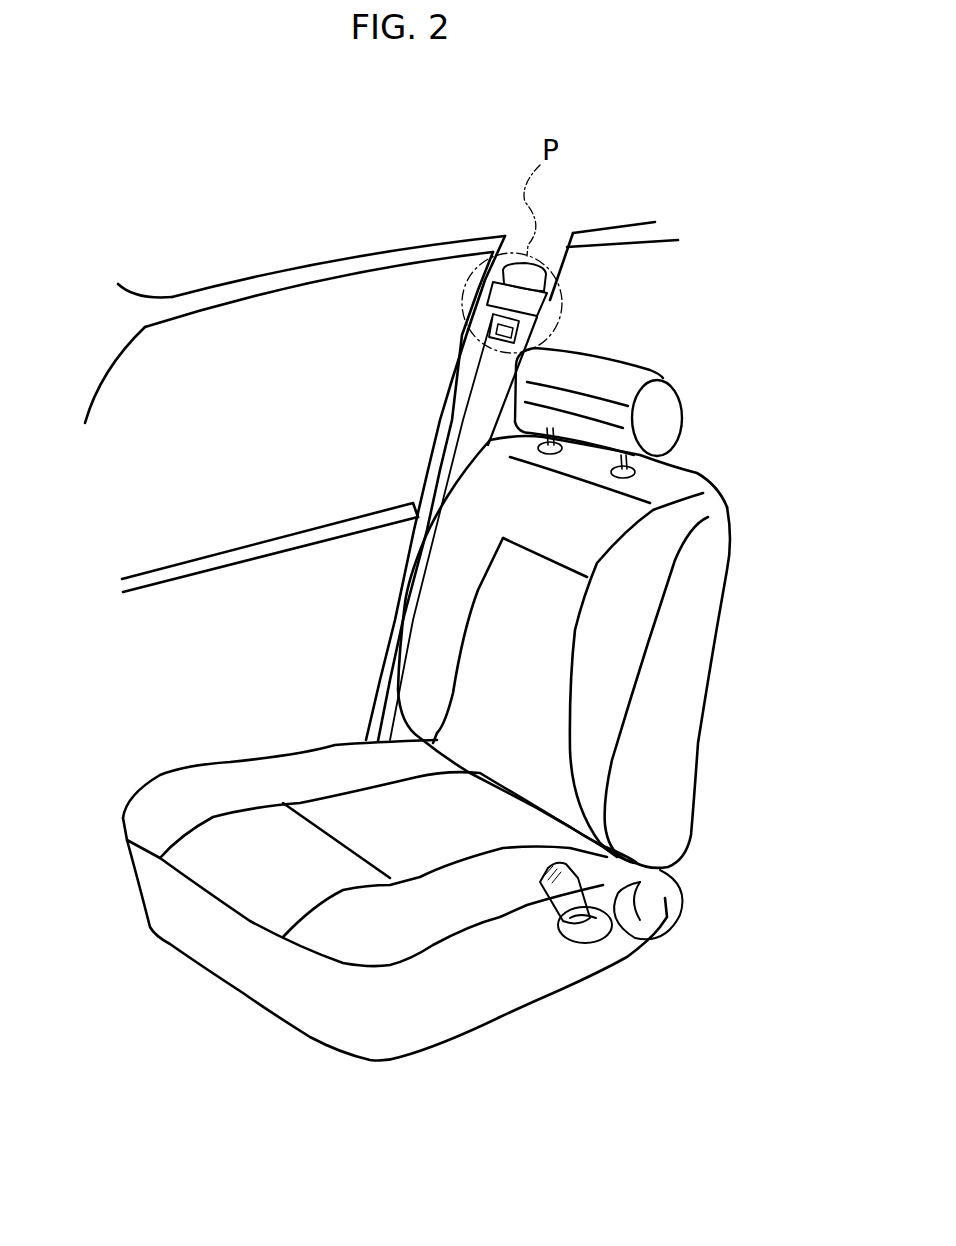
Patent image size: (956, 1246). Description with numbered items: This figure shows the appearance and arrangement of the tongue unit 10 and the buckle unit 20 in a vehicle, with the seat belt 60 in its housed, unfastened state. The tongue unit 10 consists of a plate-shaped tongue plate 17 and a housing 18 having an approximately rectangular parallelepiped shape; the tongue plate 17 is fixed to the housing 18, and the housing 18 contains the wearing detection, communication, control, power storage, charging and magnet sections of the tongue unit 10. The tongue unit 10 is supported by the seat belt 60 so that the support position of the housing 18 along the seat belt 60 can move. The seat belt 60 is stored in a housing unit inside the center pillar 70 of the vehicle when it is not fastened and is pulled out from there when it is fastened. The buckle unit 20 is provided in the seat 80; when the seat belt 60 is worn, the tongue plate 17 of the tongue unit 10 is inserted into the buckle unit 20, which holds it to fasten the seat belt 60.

The tongue unit 10 is at (551, 306).
The tongue plate 17 is at (495, 345).
The housing 18 is at (523, 305).
The buckle unit 20 is at (565, 893).
The seat belt 60 is at (480, 412).
The center pillar 70 is at (513, 352).
The seat 80 is at (340, 772).